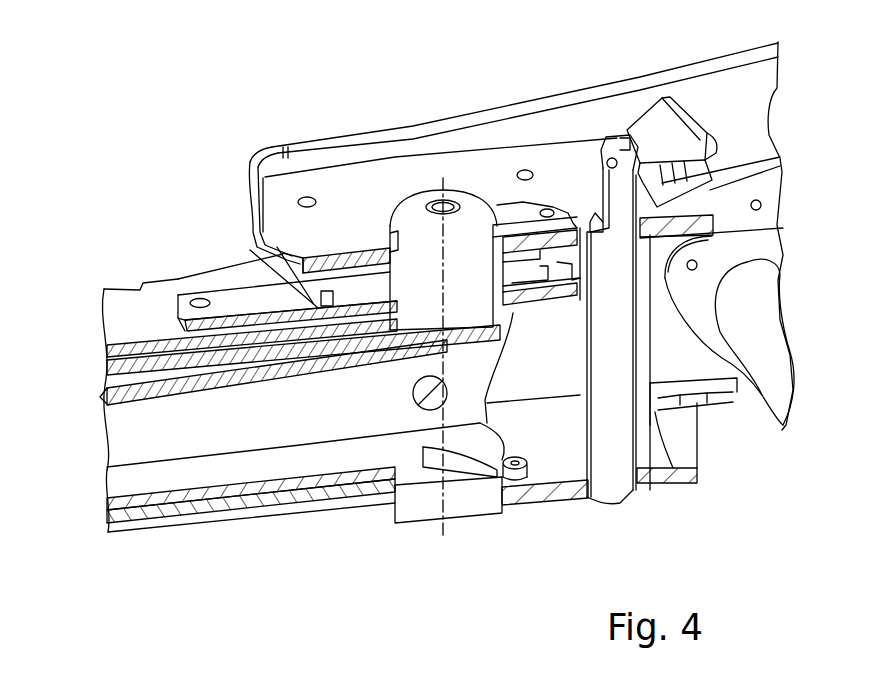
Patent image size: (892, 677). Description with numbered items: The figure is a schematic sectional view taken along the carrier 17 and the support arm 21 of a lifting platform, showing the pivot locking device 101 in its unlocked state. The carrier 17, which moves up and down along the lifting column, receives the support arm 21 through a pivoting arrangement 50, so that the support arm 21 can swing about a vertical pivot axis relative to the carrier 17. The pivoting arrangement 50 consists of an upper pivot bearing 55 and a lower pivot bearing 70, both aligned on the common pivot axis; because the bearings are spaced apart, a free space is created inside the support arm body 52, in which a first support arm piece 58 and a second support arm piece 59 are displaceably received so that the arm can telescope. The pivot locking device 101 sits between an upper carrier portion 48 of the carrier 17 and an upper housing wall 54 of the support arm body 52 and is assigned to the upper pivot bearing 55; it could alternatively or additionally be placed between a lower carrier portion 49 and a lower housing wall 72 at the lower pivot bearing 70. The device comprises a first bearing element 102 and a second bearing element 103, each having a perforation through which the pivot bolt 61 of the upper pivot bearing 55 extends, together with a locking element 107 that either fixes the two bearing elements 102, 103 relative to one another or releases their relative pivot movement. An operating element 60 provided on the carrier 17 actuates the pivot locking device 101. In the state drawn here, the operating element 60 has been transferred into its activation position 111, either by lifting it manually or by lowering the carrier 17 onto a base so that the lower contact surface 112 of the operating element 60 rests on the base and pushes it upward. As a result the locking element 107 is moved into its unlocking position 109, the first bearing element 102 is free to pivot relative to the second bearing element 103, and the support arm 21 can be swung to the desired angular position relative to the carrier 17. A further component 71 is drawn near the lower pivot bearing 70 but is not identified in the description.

The carrier 17 is at (436, 80).
The support arm 21 is at (205, 553).
The upper carrier portion 48 is at (281, 191).
The lower carrier portion 49 is at (333, 527).
The pivoting arrangement 50 is at (392, 177).
The support arm body 52 is at (178, 263).
The upper housing wall 54 is at (168, 290).
The upper pivot bearing 55 is at (372, 201).
The first support arm piece 58 is at (105, 364).
The second support arm piece 59 is at (106, 398).
The operating element 60 is at (605, 446).
The pivot bolt 61 is at (414, 204).
The lower pivot bearing 70 is at (389, 545).
The locking block 71 is at (460, 507).
The lower housing wall 72 is at (150, 530).
The pivot locking device 101 is at (160, 220).
The first bearing element 102 is at (357, 288).
The second bearing element 103 is at (234, 286).
The locking element 107 is at (562, 226).
The unlocking position 109 is at (577, 232).
The activation position 111 is at (665, 512).
The lower contact surface 112 is at (612, 501).